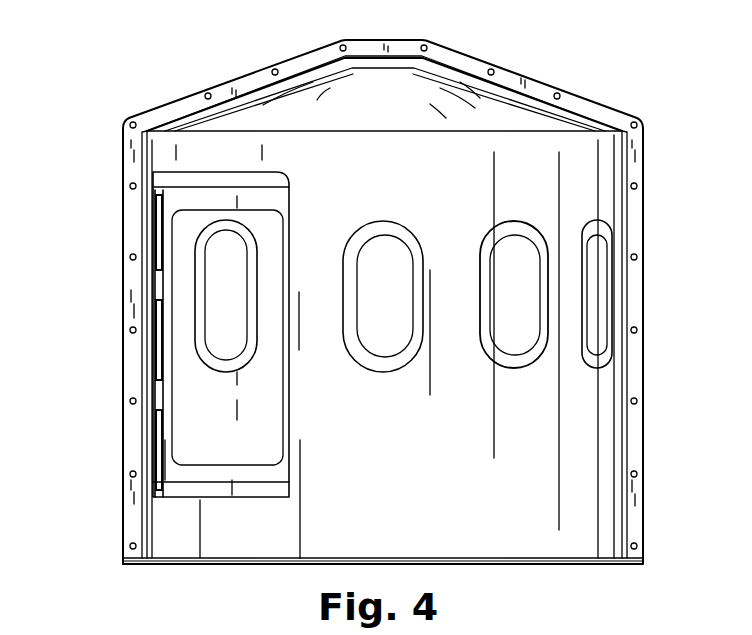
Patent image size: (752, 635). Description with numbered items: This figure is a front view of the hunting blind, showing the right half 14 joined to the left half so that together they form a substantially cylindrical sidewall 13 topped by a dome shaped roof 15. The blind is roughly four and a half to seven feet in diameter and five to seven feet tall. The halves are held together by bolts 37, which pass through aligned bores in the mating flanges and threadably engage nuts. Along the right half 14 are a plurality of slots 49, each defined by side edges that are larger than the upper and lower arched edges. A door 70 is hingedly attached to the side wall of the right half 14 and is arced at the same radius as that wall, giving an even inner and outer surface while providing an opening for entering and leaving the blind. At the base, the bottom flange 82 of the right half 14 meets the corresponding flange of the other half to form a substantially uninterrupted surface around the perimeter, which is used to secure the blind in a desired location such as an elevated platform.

The sidewall 13 is at (258, 545).
The right half 14 is at (507, 512).
The roof 15 is at (488, 102).
The bolts 37 is at (131, 401).
The slots 49 is at (516, 268).
The door 70 is at (212, 483).
The bottom flange 82 is at (287, 565).